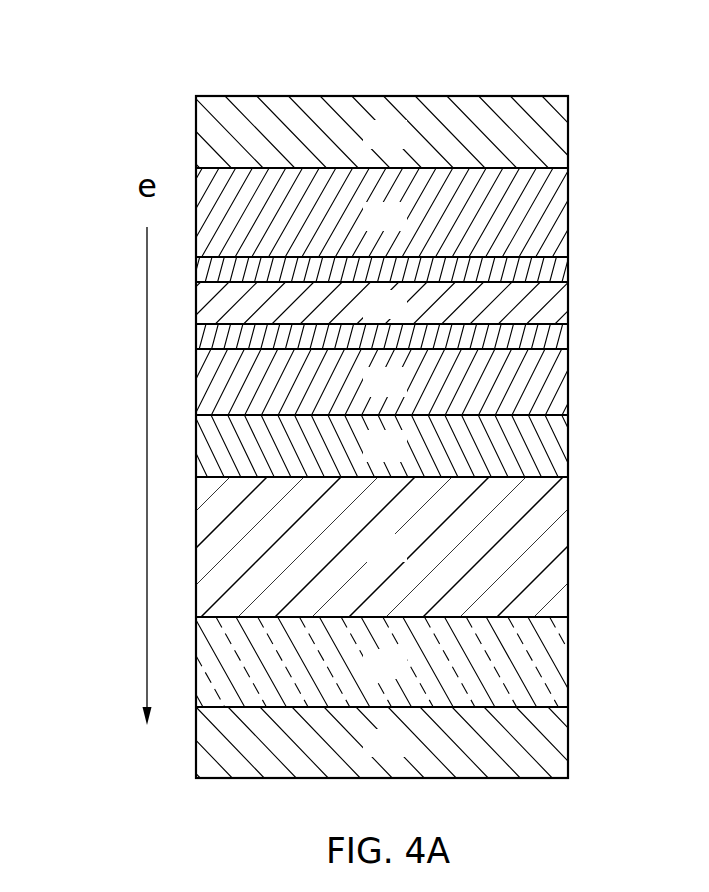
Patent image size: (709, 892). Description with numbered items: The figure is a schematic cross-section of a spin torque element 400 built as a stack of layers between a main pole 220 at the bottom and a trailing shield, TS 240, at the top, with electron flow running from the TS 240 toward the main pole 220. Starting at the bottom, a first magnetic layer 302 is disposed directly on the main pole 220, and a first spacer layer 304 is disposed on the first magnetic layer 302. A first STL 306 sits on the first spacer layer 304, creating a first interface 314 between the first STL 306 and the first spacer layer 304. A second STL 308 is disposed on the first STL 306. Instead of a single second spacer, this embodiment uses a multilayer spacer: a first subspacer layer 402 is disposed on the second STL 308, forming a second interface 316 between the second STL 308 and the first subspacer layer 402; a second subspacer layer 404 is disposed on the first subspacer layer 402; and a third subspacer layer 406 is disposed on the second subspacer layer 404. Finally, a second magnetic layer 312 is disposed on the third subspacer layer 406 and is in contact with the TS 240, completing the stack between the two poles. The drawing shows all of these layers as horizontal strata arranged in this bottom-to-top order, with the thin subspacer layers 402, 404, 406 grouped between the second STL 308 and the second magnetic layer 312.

The spin torque element 400 is at (170, 36).
The TS 240 is at (406, 146).
The second magnetic layer 312 is at (406, 228).
The third subspacer layer 406 is at (557, 272).
The second subspacer layer 404 is at (406, 316).
The first subspacer layer 402 is at (558, 340).
The second interface 316 is at (536, 362).
The second STL 308 is at (406, 394).
The first STL 306 is at (406, 459).
The first interface 314 is at (533, 473).
The first spacer layer 304 is at (406, 559).
The first magnetic layer 302 is at (406, 675).
The main pole 220 is at (406, 754).